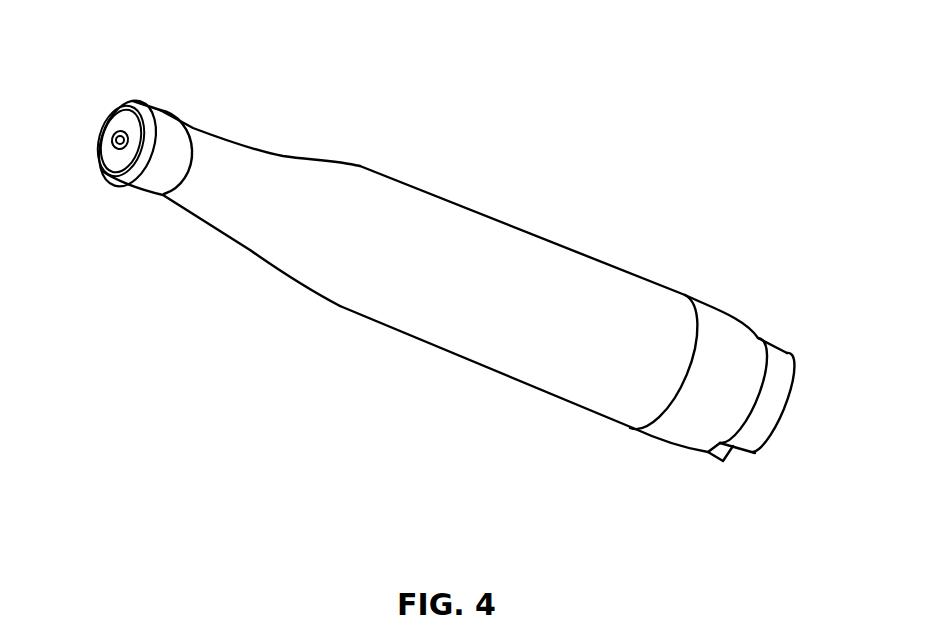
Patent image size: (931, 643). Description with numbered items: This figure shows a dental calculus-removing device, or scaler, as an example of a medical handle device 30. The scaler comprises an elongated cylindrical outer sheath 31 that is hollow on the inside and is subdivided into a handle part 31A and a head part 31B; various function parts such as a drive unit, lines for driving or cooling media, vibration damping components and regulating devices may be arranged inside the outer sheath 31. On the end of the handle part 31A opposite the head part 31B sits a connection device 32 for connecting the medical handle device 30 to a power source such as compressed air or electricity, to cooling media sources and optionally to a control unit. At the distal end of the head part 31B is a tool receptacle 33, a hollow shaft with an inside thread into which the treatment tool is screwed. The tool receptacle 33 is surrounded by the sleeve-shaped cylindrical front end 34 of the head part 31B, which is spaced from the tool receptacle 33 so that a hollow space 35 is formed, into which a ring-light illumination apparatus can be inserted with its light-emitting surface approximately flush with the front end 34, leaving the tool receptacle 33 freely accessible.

The medical handle device 30 is at (524, 128).
The outer sheath 31 is at (430, 342).
The handle part 31A is at (553, 275).
The head part 31B is at (245, 155).
The connection device 32 is at (797, 367).
The tool receptacle 33 is at (118, 130).
The cylindrical front end 34 is at (130, 163).
The hollow space 35 is at (103, 144).